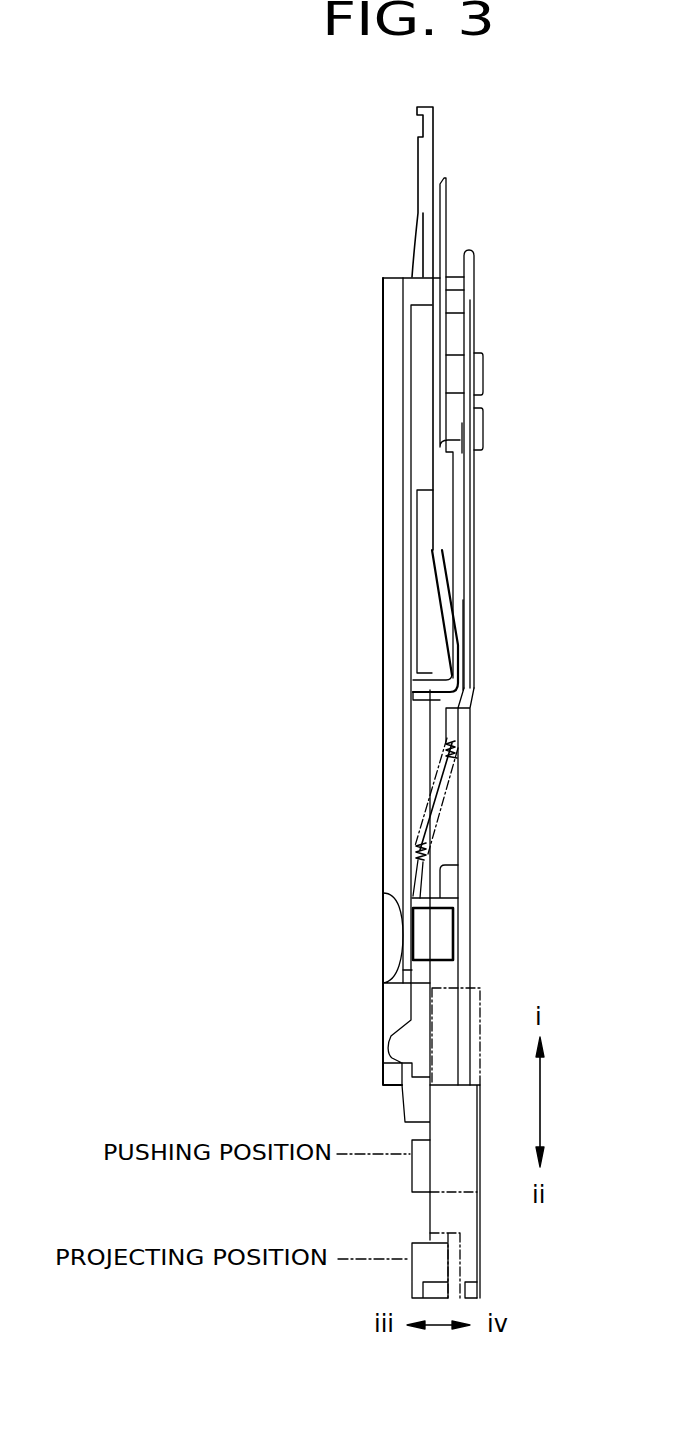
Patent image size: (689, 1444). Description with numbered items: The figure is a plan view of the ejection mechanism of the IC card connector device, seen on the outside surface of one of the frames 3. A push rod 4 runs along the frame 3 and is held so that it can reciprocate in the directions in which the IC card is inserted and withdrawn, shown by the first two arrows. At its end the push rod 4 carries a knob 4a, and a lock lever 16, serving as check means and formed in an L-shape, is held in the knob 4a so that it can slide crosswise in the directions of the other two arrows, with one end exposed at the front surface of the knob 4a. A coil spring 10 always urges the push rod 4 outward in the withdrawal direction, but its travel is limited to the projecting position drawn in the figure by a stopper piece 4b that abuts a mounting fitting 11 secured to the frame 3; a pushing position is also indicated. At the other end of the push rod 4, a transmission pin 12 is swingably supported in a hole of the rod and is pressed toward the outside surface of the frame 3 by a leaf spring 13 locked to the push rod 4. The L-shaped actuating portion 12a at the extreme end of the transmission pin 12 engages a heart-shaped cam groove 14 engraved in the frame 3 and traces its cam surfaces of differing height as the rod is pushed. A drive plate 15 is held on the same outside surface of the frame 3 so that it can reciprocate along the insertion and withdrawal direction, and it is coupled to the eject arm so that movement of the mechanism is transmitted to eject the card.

The frame 3 is at (393, 333).
The push rod 4 is at (472, 653).
The knob 4a is at (470, 1275).
The stopper piece 4b is at (450, 882).
The coil spring 10 is at (448, 782).
The mounting fitting 11 is at (443, 945).
The transmission pin 12 is at (450, 580).
The actuating portion 12a is at (420, 695).
The leaf spring 13 is at (463, 613).
The heart-shaped cam groove 14 is at (420, 745).
The drive plate 15 is at (440, 190).
The lock lever 16 is at (477, 1242).